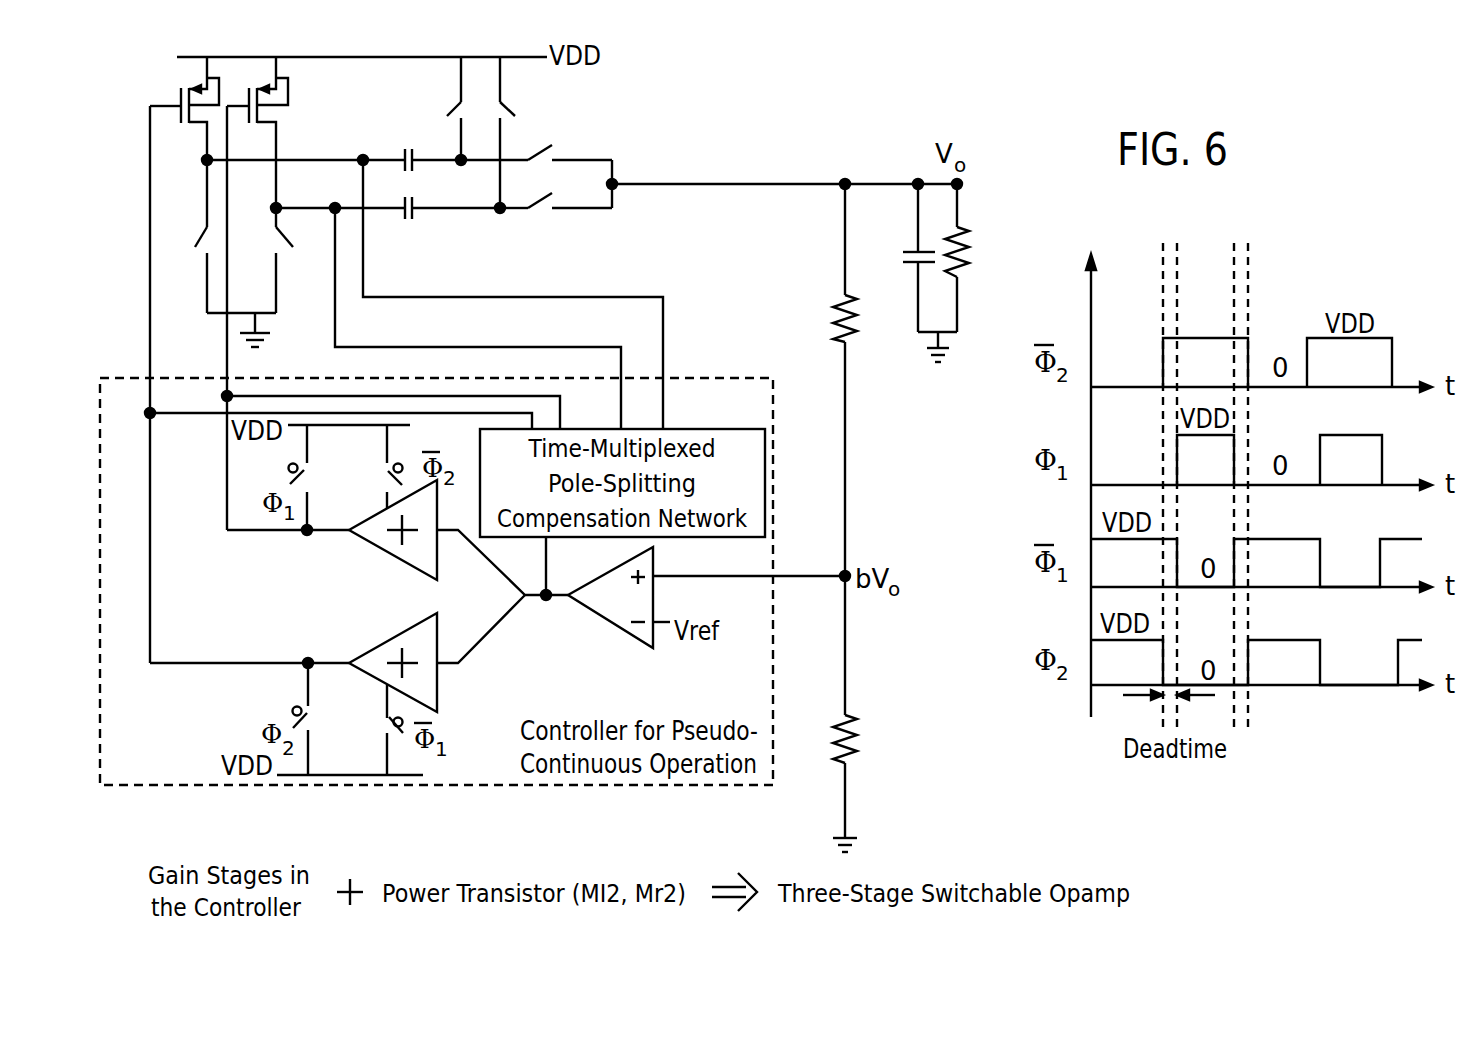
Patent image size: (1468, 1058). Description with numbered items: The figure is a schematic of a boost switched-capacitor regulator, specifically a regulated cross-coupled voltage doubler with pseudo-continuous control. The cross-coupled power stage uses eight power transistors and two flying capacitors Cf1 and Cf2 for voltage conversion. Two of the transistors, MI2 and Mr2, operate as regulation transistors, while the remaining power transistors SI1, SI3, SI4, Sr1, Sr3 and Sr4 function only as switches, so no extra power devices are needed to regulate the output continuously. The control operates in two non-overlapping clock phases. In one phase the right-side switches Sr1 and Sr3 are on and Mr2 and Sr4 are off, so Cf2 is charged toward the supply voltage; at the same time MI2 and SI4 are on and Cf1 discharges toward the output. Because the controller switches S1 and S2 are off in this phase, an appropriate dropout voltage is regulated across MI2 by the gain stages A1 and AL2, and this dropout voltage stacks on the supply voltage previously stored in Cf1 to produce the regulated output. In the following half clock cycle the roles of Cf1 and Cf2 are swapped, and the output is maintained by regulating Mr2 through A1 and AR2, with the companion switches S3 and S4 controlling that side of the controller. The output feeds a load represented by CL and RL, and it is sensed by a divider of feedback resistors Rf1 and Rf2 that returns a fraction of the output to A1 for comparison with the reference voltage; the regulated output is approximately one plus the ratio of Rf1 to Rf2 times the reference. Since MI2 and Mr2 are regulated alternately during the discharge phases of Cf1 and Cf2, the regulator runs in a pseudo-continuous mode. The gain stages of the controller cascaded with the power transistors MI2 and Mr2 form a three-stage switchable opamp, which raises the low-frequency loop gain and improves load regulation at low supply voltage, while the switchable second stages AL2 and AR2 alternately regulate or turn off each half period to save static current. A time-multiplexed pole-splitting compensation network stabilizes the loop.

The regulation transistor MI2 is at (184, 108).
The regulation transistor Mr2 is at (285, 132).
The power transistor switch SI1 is at (437, 108).
The power transistor switch Sr1 is at (525, 132).
The power transistor switch SI3 is at (185, 236).
The power transistor switch Sr3 is at (301, 260).
The power transistor switch SI4 is at (536, 141).
The power transistor switch Sr4 is at (556, 218).
The flying capacitor Cf1 is at (428, 141).
The flying capacitor Cf2 is at (447, 233).
The load capacitor CL is at (905, 258).
The load resistor RL is at (977, 258).
The feedback resistor Rf1 is at (868, 380).
The feedback resistor Rf2 is at (868, 714).
The switch S1 is at (319, 719).
The switch S2 is at (378, 730).
The switch S3 is at (316, 477).
The switch S4 is at (378, 466).
The switchable second gain stage AR2 is at (454, 537).
The switchable second gain stage AL2 is at (432, 653).
The first gain stage A1 is at (619, 603).